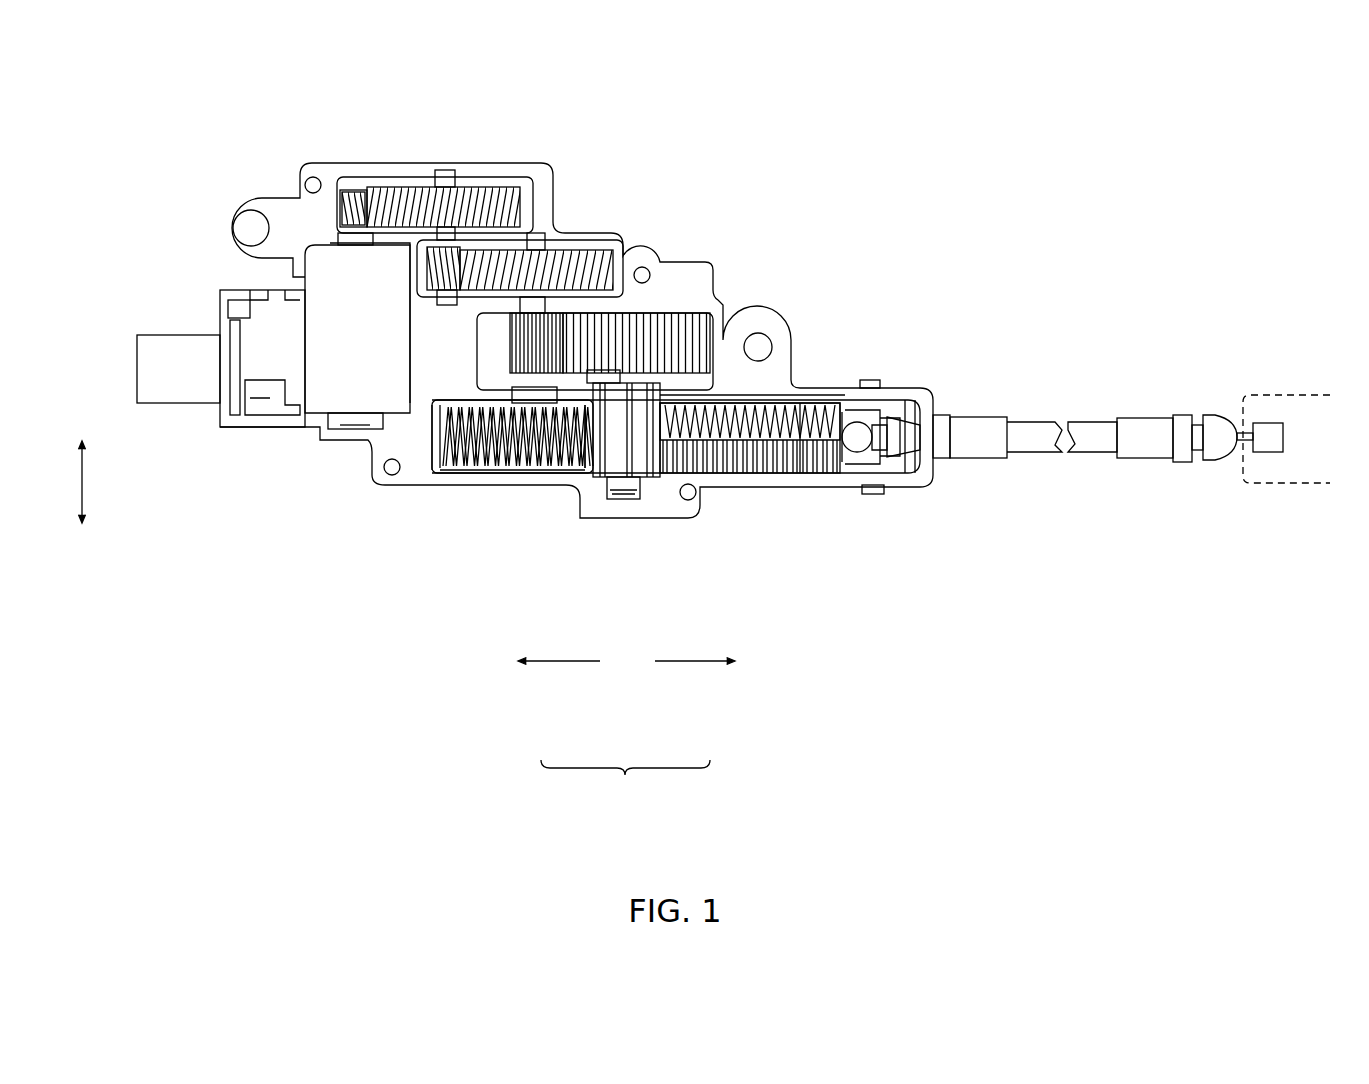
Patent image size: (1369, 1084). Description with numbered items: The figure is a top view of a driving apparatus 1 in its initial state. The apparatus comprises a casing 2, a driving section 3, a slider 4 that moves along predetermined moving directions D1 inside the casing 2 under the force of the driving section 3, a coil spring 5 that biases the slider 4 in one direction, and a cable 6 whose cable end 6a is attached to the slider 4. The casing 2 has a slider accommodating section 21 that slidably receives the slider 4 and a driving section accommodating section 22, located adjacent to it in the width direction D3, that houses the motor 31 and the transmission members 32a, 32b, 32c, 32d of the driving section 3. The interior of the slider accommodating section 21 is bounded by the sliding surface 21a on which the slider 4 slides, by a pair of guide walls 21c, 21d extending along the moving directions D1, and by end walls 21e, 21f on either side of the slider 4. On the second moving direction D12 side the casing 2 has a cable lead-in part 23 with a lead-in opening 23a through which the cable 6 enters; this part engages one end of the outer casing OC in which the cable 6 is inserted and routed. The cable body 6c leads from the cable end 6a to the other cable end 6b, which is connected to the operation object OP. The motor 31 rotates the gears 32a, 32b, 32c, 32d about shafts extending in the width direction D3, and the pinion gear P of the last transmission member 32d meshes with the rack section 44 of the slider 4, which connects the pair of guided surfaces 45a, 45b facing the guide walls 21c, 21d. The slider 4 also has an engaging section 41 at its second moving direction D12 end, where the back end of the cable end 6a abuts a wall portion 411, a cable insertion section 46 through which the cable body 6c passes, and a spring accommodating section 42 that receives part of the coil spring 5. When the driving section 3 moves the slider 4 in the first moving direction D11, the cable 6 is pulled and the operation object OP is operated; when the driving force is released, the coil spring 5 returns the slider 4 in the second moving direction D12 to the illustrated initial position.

The driving apparatus 1 is at (705, 442).
The casing 2 is at (569, 337).
The driving section 3 is at (292, 243).
The slider 4 is at (828, 486).
The coil spring 5 is at (510, 468).
The cable 6 is at (858, 422).
The cable end 6a is at (850, 447).
The cable end 6b is at (1266, 430).
The cable body 6c is at (905, 402).
The slider accommodating section 21 is at (473, 473).
The sliding surface 21a is at (538, 468).
The guide wall 21c is at (430, 418).
The guide wall 21d is at (570, 473).
The end wall 21e is at (445, 473).
The end wall 21f is at (873, 400).
The driving section accommodating section 22 is at (530, 163).
The cable lead-in part 23 is at (940, 492).
The lead-in opening 23a is at (942, 456).
The motor 31 is at (340, 315).
The transmission member 32a is at (365, 188).
The transmission member 32b is at (478, 188).
The transmission member 32c is at (560, 240).
The transmission member 32d is at (670, 330).
The engaging section 41 is at (842, 410).
The spring accommodating section 42 is at (800, 400).
The rack section 44 is at (715, 468).
The guided surface 45a is at (742, 403).
The guided surface 45b is at (752, 462).
The cable insertion section 46 is at (893, 452).
The wall portion 411 is at (865, 470).
The pinion gear P is at (640, 455).
The outer casing OC is at (1093, 430).
The operation object OP is at (1280, 487).
The moving directions D1 is at (625, 783).
The first moving direction D11 is at (560, 664).
The second moving direction D12 is at (697, 664).
The width direction D3 is at (83, 483).